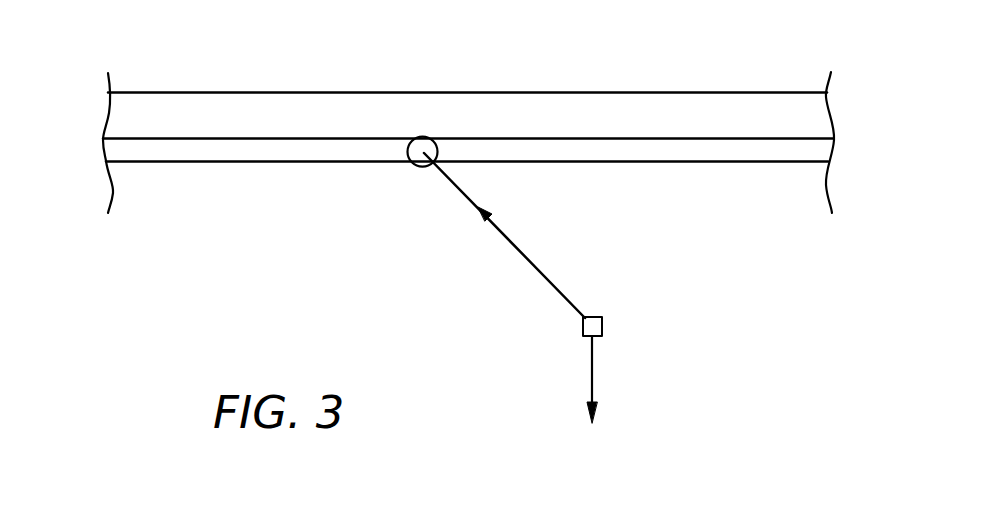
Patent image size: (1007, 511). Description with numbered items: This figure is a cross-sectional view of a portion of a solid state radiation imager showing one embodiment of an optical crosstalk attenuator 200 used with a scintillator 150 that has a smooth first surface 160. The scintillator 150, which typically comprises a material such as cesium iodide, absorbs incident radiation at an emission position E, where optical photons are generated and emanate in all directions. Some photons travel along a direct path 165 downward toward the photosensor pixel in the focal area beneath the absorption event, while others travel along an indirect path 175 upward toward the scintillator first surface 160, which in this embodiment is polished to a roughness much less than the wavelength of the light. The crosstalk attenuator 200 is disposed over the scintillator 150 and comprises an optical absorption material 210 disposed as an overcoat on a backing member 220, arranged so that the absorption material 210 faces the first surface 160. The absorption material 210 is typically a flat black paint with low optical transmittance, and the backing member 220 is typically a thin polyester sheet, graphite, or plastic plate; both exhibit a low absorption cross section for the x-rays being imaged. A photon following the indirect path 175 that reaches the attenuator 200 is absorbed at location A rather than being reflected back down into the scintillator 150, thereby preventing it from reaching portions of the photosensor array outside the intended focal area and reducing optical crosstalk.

The optical crosstalk attenuator 200 is at (842, 83).
The backing member 220 is at (107, 112).
The optical absorption material 210 is at (104, 157).
The scintillator first surface 160 is at (267, 163).
The scintillator 150 is at (327, 298).
The absorption location A is at (435, 148).
The indirect path 175 is at (501, 232).
The emission position E is at (582, 323).
The direct path 165 is at (595, 392).